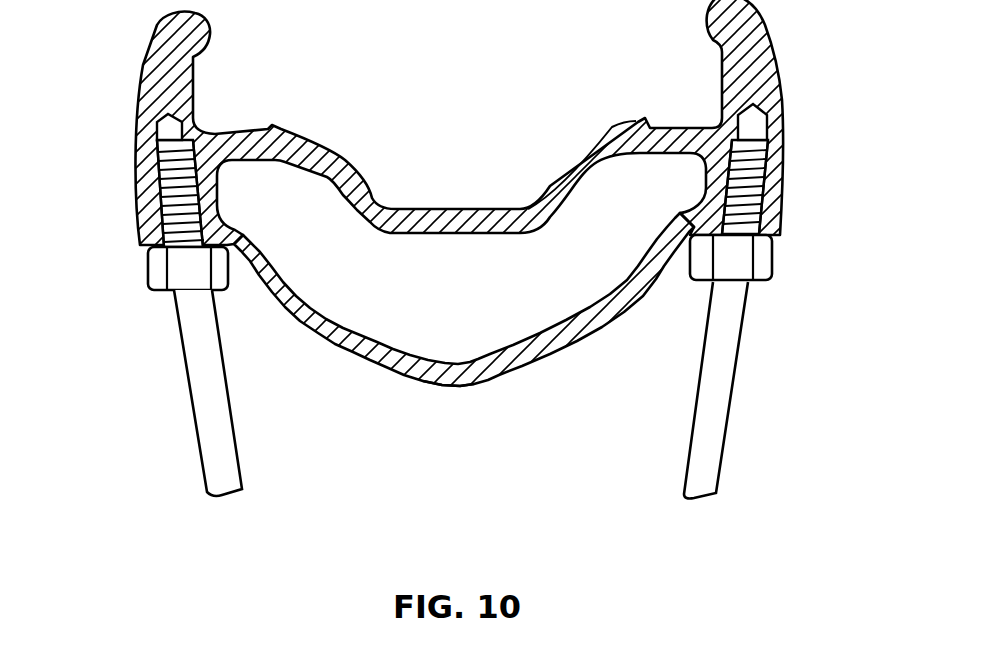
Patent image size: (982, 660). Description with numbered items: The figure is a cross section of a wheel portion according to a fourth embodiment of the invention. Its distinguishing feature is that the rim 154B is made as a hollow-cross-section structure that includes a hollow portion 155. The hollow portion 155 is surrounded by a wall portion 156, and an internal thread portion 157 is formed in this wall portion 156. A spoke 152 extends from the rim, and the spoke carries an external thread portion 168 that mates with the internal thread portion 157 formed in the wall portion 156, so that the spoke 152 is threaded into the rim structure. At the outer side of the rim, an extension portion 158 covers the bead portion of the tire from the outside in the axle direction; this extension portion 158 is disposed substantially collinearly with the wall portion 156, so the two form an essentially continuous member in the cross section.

The spoke 152 is at (203, 400).
The rim 154B is at (455, 387).
The hollow portion 155 is at (360, 322).
The wall portion 156 is at (147, 188).
The internal thread portion 157 is at (153, 181).
The extension portion 158 is at (178, 40).
The external thread portion 168 is at (147, 235).